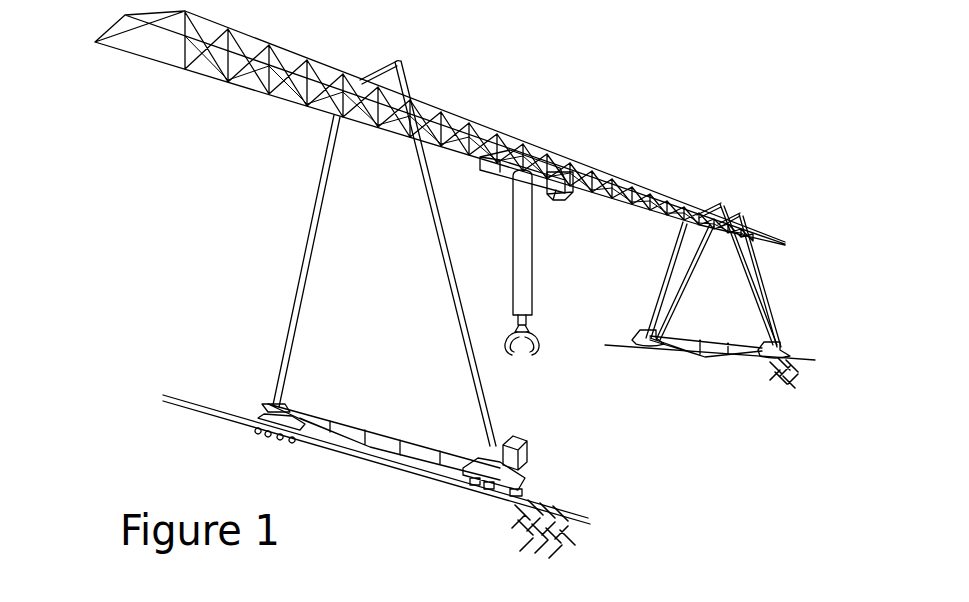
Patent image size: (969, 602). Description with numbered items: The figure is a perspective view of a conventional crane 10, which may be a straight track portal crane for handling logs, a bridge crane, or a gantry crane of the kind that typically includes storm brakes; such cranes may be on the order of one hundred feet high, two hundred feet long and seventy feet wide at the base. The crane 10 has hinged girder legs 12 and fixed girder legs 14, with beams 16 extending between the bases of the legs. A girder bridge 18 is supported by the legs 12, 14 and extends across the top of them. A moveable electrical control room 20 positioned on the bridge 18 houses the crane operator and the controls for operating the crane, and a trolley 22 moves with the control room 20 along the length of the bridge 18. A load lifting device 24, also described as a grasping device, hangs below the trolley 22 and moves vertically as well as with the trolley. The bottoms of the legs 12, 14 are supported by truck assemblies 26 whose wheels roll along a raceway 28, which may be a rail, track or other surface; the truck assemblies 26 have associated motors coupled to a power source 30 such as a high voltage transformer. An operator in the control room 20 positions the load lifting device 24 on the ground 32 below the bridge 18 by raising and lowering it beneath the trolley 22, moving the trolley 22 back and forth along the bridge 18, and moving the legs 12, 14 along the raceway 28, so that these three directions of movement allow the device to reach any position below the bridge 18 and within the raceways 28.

The crane 10 is at (224, 157).
The hinged girder legs 12 is at (444, 281).
The fixed girder legs 14 is at (740, 262).
The beams 16 is at (706, 345).
The girder bridge 18 is at (633, 179).
The moveable electrical control room 20 is at (572, 206).
The trolley 22 is at (494, 180).
The load lifting device 24 is at (527, 295).
The truck assemblies 26 is at (640, 333).
The raceway 28 is at (696, 356).
The power source 30 is at (526, 438).
The ground 32 is at (800, 386).